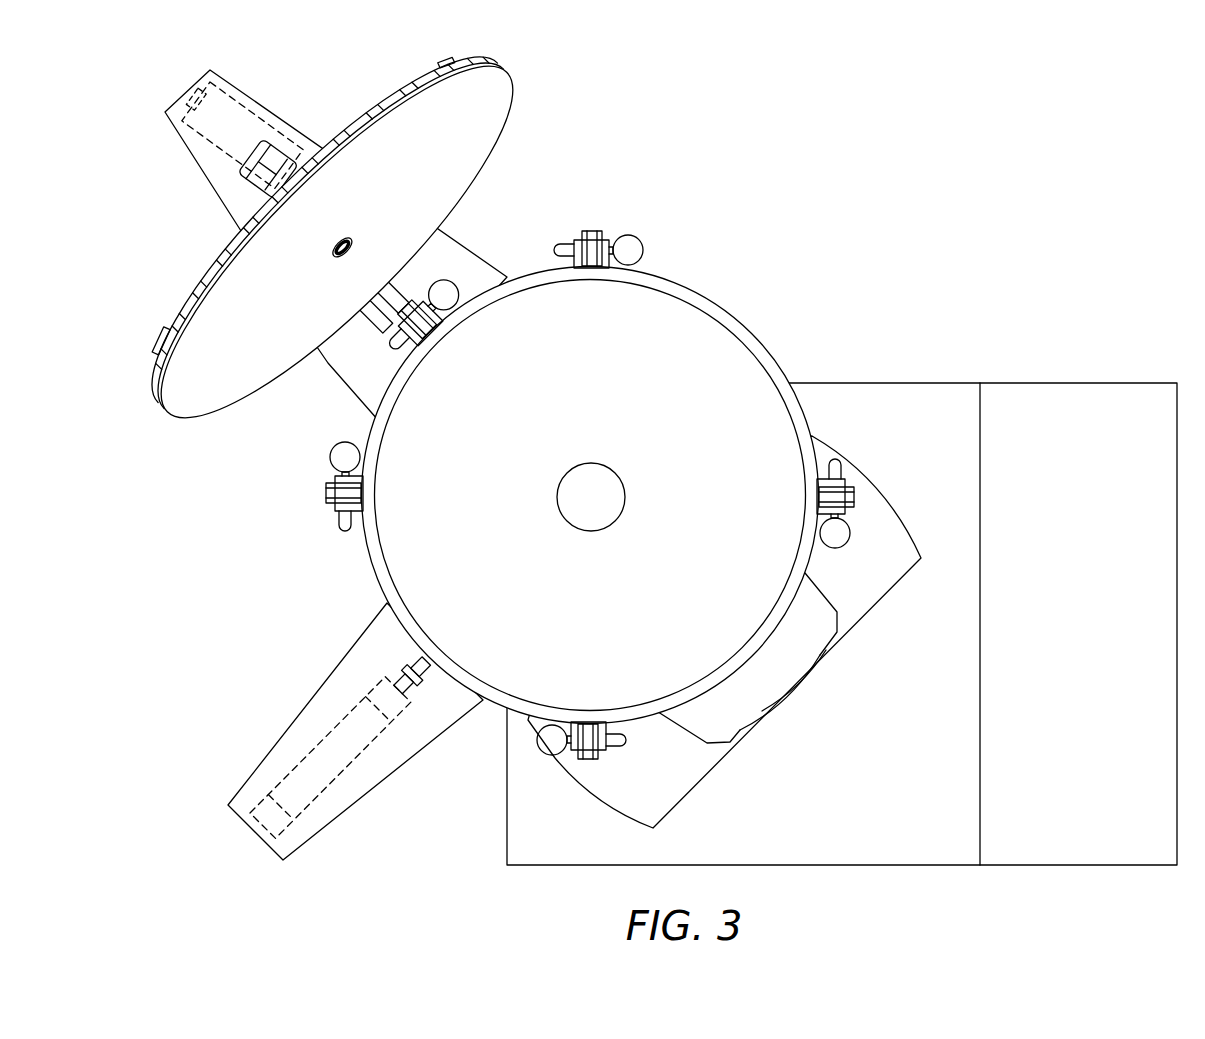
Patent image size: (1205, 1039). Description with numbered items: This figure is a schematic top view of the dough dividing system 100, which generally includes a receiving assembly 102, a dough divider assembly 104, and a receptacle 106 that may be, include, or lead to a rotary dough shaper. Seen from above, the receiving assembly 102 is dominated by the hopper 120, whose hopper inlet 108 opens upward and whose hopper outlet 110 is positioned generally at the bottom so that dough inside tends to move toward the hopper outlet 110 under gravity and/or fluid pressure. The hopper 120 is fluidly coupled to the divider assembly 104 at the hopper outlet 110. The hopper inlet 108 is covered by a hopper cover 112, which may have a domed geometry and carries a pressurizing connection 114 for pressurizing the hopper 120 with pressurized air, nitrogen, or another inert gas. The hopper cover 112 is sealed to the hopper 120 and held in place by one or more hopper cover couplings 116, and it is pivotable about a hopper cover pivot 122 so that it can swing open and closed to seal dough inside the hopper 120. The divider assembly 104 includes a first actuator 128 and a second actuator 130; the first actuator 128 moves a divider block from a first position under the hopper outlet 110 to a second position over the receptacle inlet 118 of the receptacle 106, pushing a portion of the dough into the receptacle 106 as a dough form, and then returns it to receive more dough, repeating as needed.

The dough dividing system 100 is at (644, 454).
The receiving assembly 102 is at (564, 475).
The dough divider assembly 104 is at (317, 457).
The receptacle 106 is at (1088, 376).
The hopper inlet 108 is at (707, 344).
The hopper outlet 110 is at (607, 481).
The hopper cover 112 is at (498, 100).
The pressurizing connection 114 is at (250, 152).
The hopper cover coupling 116 is at (630, 241).
The receptacle inlet 118 is at (808, 703).
The hopper 120 is at (772, 353).
The hopper cover pivot 122 is at (412, 343).
The first actuator 128 is at (203, 136).
The second actuator 130 is at (313, 790).